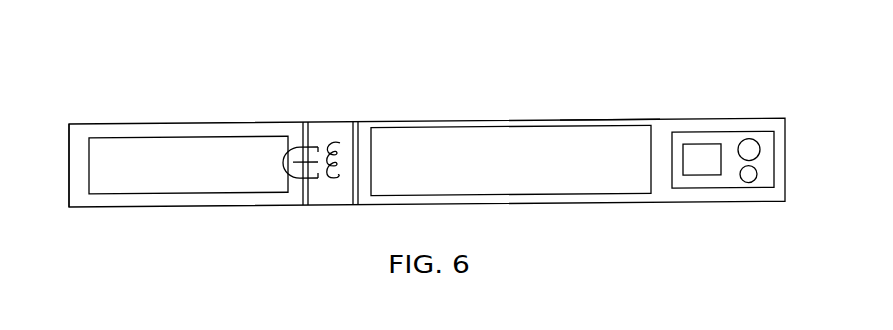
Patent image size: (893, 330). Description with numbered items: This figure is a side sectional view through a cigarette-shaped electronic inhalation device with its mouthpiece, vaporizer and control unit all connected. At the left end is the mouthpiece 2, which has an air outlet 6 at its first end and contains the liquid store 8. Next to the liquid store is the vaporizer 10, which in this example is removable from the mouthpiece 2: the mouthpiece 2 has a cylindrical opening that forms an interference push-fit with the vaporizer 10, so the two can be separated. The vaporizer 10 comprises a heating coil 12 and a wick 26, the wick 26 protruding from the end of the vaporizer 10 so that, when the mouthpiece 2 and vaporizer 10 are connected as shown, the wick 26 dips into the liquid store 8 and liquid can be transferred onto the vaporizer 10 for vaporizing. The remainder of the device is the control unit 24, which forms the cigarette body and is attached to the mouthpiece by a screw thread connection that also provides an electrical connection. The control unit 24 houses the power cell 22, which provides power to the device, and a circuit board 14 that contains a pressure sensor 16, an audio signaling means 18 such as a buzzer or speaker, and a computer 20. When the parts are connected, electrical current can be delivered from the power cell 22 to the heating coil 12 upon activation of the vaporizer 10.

The mouthpiece 2 is at (228, 128).
The air outlet 6 is at (65, 165).
The liquid store 8 is at (160, 155).
The vaporizer 10 is at (318, 135).
The heating coil 12 is at (336, 180).
The circuit board 14 is at (765, 135).
The pressure sensor 16 is at (747, 140).
The audio signaling means 18 is at (740, 173).
The computer 20 is at (695, 155).
The power cell 22 is at (513, 148).
The control unit 24 is at (593, 123).
The wick 26 is at (295, 178).